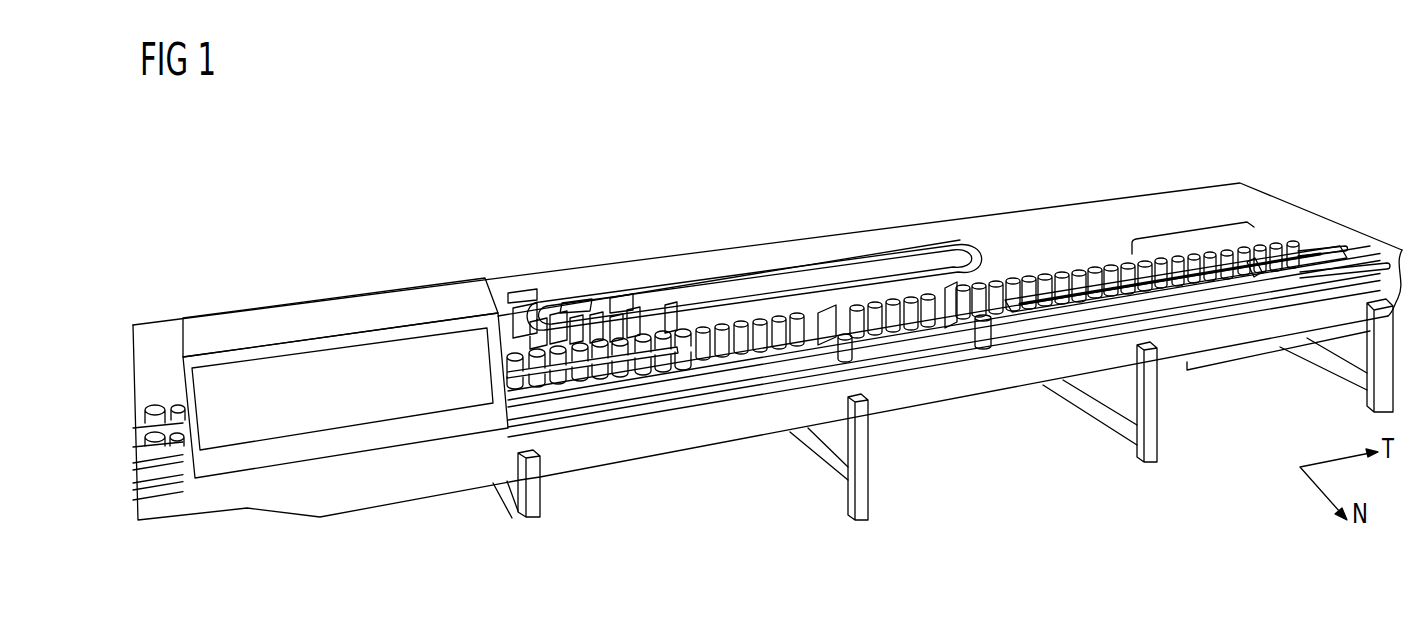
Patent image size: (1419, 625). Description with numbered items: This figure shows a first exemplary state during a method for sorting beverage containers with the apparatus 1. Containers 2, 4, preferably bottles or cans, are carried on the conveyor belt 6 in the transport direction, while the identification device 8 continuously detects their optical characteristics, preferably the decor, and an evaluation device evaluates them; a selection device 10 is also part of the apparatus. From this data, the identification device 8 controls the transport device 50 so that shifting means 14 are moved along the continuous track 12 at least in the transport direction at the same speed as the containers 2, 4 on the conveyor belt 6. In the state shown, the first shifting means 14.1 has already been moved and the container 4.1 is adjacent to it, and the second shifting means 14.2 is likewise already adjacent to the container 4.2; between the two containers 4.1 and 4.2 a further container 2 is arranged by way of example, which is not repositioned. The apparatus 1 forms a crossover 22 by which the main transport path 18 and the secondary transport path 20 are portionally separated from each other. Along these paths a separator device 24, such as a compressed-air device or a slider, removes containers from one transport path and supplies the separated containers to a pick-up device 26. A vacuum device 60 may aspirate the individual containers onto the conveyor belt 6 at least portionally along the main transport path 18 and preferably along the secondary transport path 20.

The apparatus 1 is at (203, 165).
The first container type 2 is at (177, 404).
The second container type 4 is at (719, 374).
The first exemplary container of the second type of container 4.1 is at (685, 362).
The second exemplary container of the second type of container 4.2 is at (647, 368).
The conveyor belt 6 is at (760, 365).
The identification device 8 is at (308, 312).
The selection device 10 is at (705, 212).
The continuous track 12 is at (797, 262).
The shifting means 14 is at (592, 256).
The first exemplary shifting means 14.1 is at (657, 317).
The second exemplary shifting means 14.2 is at (620, 317).
The main transport path 18 is at (1333, 250).
The secondary transport path 20 is at (1353, 267).
The crossover 22 is at (1118, 300).
The separator device 24 is at (1252, 257).
The pick-up device 26 is at (1180, 247).
The transport device 50 is at (870, 265).
The vacuum device 60 is at (1389, 255).